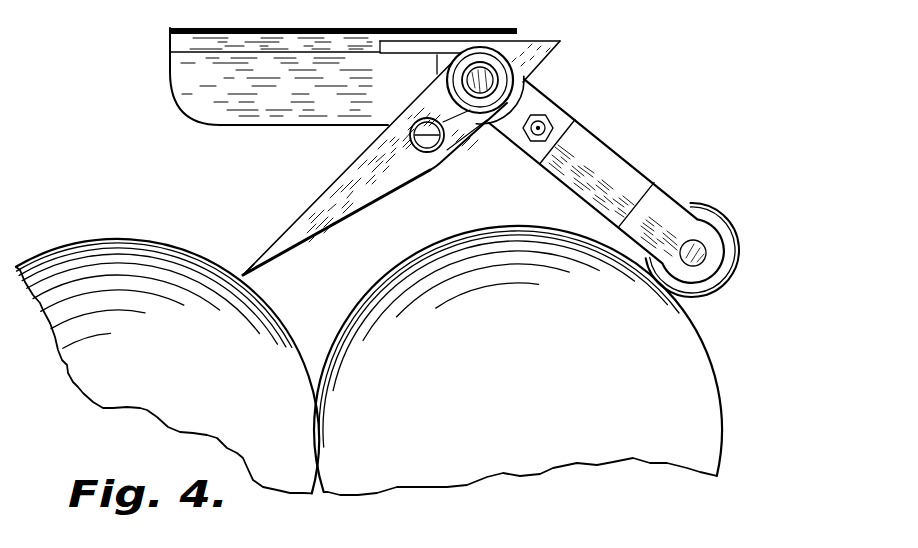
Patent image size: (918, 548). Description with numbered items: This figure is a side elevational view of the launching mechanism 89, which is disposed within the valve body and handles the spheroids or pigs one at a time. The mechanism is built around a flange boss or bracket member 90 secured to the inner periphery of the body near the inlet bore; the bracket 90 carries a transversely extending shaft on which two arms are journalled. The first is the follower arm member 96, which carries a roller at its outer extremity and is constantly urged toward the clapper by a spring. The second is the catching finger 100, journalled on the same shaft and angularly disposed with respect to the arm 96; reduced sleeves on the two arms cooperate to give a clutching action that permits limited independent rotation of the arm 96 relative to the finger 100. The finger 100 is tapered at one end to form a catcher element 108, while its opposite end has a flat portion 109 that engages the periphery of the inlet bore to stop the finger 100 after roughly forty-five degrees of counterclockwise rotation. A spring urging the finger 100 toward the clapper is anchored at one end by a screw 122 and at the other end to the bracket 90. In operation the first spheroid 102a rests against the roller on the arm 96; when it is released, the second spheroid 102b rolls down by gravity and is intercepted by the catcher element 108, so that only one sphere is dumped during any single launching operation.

The bracket member 90 is at (178, 48).
The launching mechanism 89 is at (548, 61).
The flat portion 109 is at (527, 63).
The follower arm member 96 is at (628, 177).
The screw 122 is at (430, 140).
The catching finger 100 is at (302, 225).
The catcher element 108 is at (247, 278).
The first spheroid 102a is at (435, 257).
The second spheroid 102b is at (163, 252).